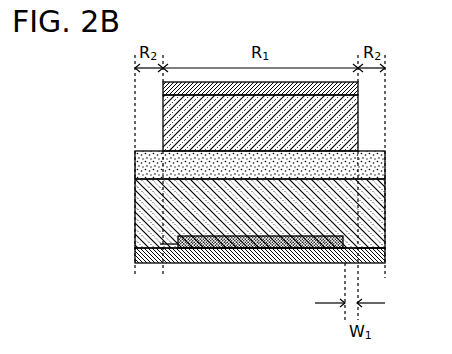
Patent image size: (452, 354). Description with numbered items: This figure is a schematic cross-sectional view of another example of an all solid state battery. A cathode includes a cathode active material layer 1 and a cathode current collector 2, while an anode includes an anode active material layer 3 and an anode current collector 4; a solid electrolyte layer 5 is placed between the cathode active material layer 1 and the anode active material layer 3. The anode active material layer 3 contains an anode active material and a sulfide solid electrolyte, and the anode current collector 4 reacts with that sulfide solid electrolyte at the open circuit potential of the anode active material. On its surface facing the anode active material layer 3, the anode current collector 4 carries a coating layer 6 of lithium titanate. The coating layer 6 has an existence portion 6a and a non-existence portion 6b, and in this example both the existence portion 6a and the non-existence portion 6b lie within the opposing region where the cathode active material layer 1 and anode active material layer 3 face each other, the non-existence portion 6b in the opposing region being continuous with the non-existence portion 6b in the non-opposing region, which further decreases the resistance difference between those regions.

The cathode active material layer 1 is at (178, 126).
The cathode current collector 2 is at (163, 94).
The anode active material layer 3 is at (150, 210).
The anode current collector 4 is at (136, 258).
The solid electrolyte layer 5 is at (150, 168).
The coating layer 6 is at (162, 244).
The existence portion 6a is at (228, 263).
The non-existence portion 6b is at (334, 263).